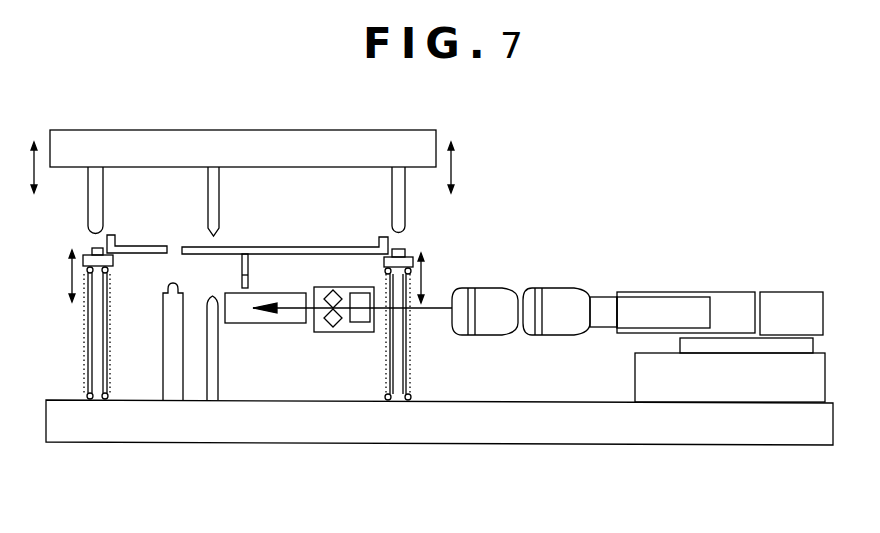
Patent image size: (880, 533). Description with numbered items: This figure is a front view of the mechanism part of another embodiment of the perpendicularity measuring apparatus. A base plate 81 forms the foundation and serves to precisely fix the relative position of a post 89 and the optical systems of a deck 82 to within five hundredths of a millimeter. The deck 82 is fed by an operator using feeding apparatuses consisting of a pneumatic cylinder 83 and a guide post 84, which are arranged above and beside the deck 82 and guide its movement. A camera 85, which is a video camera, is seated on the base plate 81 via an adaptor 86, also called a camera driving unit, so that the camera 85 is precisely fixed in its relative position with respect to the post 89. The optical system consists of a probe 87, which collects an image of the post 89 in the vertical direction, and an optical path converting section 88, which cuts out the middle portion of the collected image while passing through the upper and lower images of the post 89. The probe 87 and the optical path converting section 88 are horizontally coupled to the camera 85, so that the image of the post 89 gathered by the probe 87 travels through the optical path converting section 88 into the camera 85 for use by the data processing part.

The base plate 81 is at (312, 425).
The deck 82 is at (355, 250).
The pneumatic cylinder 83 is at (377, 155).
The guide post 84 is at (393, 400).
The camera 85 is at (678, 317).
The adaptor 86 is at (708, 388).
The probe 87 is at (245, 315).
The optical path converting section 88 is at (328, 333).
The post 89 is at (248, 280).